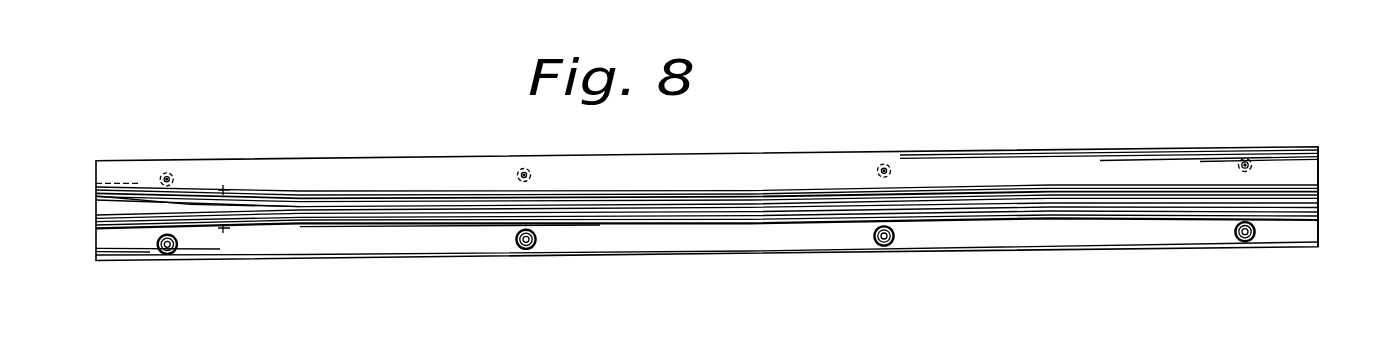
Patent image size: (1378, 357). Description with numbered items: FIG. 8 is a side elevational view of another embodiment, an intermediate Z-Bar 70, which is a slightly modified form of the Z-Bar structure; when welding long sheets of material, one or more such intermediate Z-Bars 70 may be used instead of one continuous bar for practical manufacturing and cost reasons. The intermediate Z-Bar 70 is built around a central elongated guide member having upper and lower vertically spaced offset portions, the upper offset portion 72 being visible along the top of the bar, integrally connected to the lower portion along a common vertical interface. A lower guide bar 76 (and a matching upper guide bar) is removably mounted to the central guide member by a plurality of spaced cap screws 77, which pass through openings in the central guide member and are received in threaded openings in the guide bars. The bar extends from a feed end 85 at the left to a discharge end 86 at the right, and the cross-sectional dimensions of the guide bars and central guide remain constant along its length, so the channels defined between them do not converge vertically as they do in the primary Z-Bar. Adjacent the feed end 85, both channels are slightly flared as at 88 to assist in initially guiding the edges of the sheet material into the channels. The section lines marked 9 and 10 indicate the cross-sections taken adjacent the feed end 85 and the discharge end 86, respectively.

The intermediate Z-Bar 70 is at (440, 150).
The upper offset portion 72 is at (360, 135).
The lower guide bar 76 is at (773, 240).
The cap screw 77 is at (539, 247).
The feed end 85 is at (96, 243).
The discharge end 86 is at (1318, 228).
The flared portion 88 is at (107, 205).
The section line 9- 9 is at (167, 140).
The section line 10- 10 is at (1245, 123).